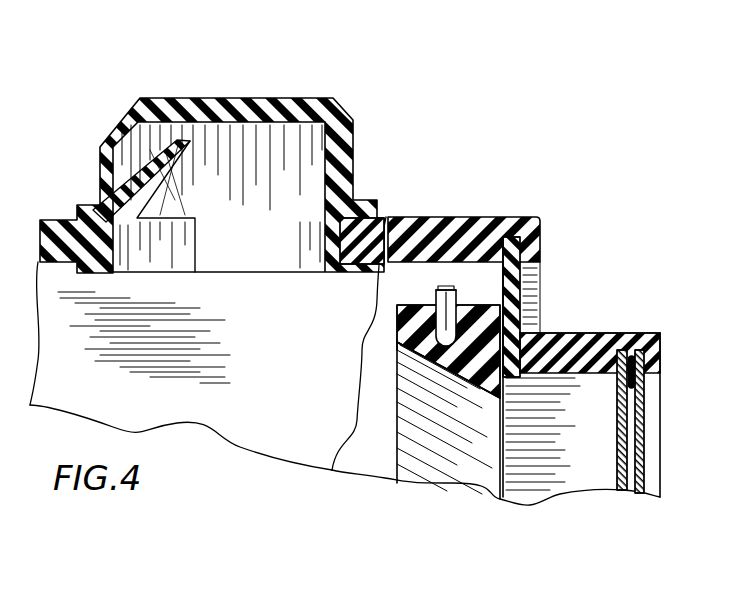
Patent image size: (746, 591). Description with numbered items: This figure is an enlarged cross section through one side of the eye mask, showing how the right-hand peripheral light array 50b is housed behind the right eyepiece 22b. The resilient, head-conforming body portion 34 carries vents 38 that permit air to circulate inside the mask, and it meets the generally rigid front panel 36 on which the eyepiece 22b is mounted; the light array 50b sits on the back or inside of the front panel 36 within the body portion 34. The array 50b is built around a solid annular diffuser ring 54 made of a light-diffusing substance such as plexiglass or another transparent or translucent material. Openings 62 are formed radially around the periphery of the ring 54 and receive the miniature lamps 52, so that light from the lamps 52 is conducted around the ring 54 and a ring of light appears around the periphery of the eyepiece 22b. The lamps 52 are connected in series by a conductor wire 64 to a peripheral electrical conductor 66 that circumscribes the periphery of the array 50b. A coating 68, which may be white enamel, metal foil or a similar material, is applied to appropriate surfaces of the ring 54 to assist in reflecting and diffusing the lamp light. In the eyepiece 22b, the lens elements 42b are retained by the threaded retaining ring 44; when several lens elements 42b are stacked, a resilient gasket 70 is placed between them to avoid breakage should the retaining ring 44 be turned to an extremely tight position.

The vent 38 is at (243, 108).
The body portion 34 is at (427, 217).
The miniature lamp 52 is at (462, 302).
The front panel 36 is at (541, 265).
The right eyepiece 22b is at (592, 316).
The threaded retaining ring 44 is at (615, 345).
The resilient gasket 70 is at (633, 386).
The lens element 42b is at (644, 423).
The coating 68 is at (513, 376).
The conductor wire 64 is at (440, 291).
The peripheral electrical conductor 66 is at (395, 305).
The opening 62 is at (437, 304).
The peripheral light array 50b is at (397, 447).
The annular diffuser ring 54 is at (448, 453).